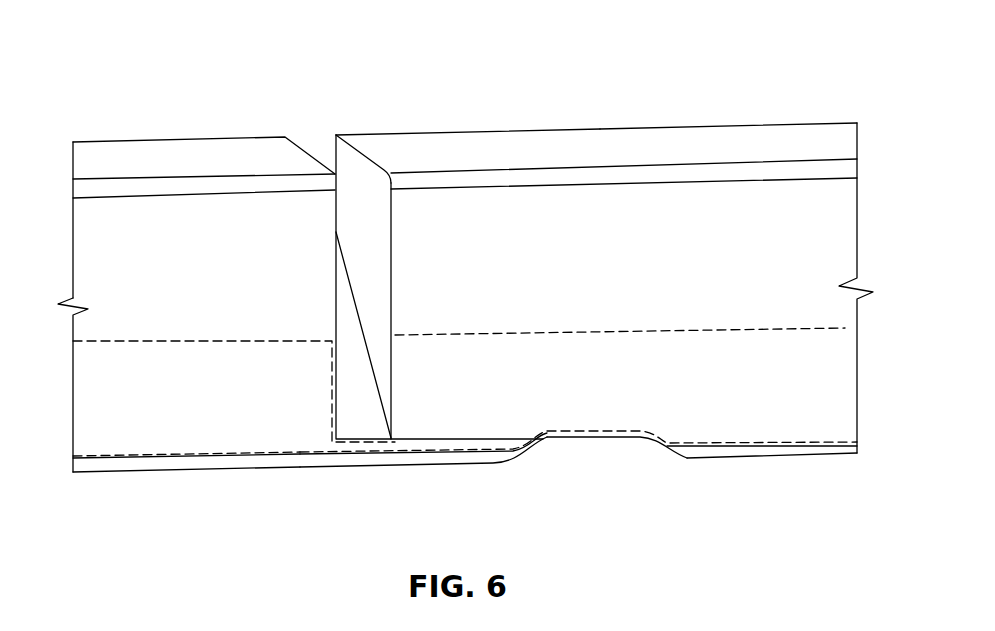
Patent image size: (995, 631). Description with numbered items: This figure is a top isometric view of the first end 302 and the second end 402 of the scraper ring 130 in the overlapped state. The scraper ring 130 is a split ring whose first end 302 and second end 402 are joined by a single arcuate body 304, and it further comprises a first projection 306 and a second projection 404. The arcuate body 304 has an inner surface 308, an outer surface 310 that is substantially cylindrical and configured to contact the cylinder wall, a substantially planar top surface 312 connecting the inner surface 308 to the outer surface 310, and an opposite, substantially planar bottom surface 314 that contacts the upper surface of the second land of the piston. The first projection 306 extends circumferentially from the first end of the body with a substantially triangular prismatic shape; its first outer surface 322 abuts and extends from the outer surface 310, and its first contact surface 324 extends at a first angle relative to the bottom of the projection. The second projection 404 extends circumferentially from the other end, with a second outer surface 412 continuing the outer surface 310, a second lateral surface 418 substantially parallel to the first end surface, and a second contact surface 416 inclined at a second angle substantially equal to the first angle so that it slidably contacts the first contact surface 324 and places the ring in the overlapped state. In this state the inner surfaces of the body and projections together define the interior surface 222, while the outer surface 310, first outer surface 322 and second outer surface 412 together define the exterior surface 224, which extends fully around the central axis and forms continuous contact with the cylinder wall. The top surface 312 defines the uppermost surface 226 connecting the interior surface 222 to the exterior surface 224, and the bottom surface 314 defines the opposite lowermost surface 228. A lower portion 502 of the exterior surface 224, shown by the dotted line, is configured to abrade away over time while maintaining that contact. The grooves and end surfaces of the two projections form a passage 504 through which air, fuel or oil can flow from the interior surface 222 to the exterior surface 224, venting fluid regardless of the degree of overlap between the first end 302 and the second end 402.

The scraper ring 130 is at (156, 27).
The first end 302 is at (258, 104).
The inner surface 308 is at (147, 137).
The arcuate body 304 is at (108, 243).
The outer surface 310 is at (113, 304).
The bottom surface 314 is at (173, 470).
The first projection 306 is at (400, 460).
The first contact surface 324 is at (355, 380).
The first outer surface 322 is at (447, 448).
The second end 402 is at (417, 97).
The second projection 404 is at (372, 147).
The interior surface 222 is at (581, 128).
The top surface 312 is at (733, 143).
The uppermost surface 226 is at (823, 143).
The second outer surface 412 is at (452, 208).
The second lateral surface 418 is at (368, 232).
The second contact surface 416 is at (363, 332).
The exterior surface 224 is at (825, 238).
The lower portion 502 is at (700, 348).
The passage 504 is at (590, 465).
The lowermost surface 228 is at (800, 455).